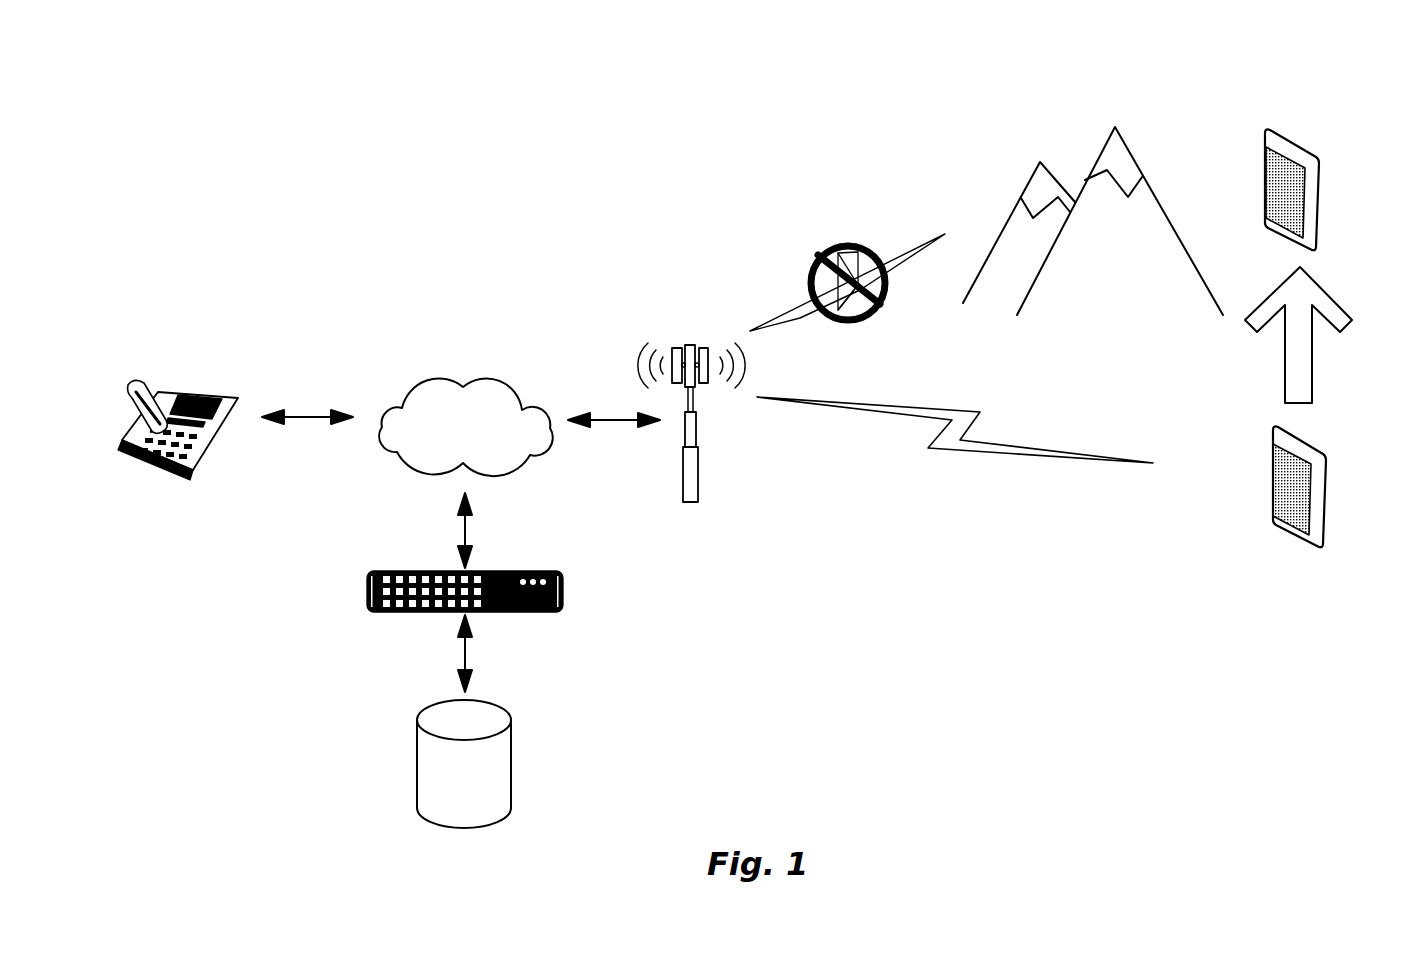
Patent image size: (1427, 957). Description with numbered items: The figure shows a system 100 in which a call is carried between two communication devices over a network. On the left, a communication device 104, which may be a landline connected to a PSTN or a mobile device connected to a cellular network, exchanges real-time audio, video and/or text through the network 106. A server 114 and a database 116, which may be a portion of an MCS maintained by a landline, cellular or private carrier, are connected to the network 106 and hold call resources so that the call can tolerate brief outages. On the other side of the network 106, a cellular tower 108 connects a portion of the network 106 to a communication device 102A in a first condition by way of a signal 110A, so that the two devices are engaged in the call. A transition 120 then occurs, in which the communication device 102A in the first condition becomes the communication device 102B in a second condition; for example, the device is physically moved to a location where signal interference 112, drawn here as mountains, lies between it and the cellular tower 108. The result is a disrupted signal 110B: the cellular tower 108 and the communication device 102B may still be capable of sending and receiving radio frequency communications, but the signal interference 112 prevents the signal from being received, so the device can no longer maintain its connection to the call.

The system 100 is at (224, 93).
The communication device in a first condition 102A is at (1308, 445).
The communication device in a second condition 102B is at (1280, 132).
The communication device 104 is at (200, 398).
The network 106 is at (427, 380).
The cellular tower 108 is at (697, 457).
The signal 110A is at (1050, 448).
The disrupted signal 110B is at (795, 292).
The signal interference 112 is at (1165, 134).
The server 114 is at (518, 570).
The database 116 is at (497, 707).
The transition 120 is at (1337, 298).